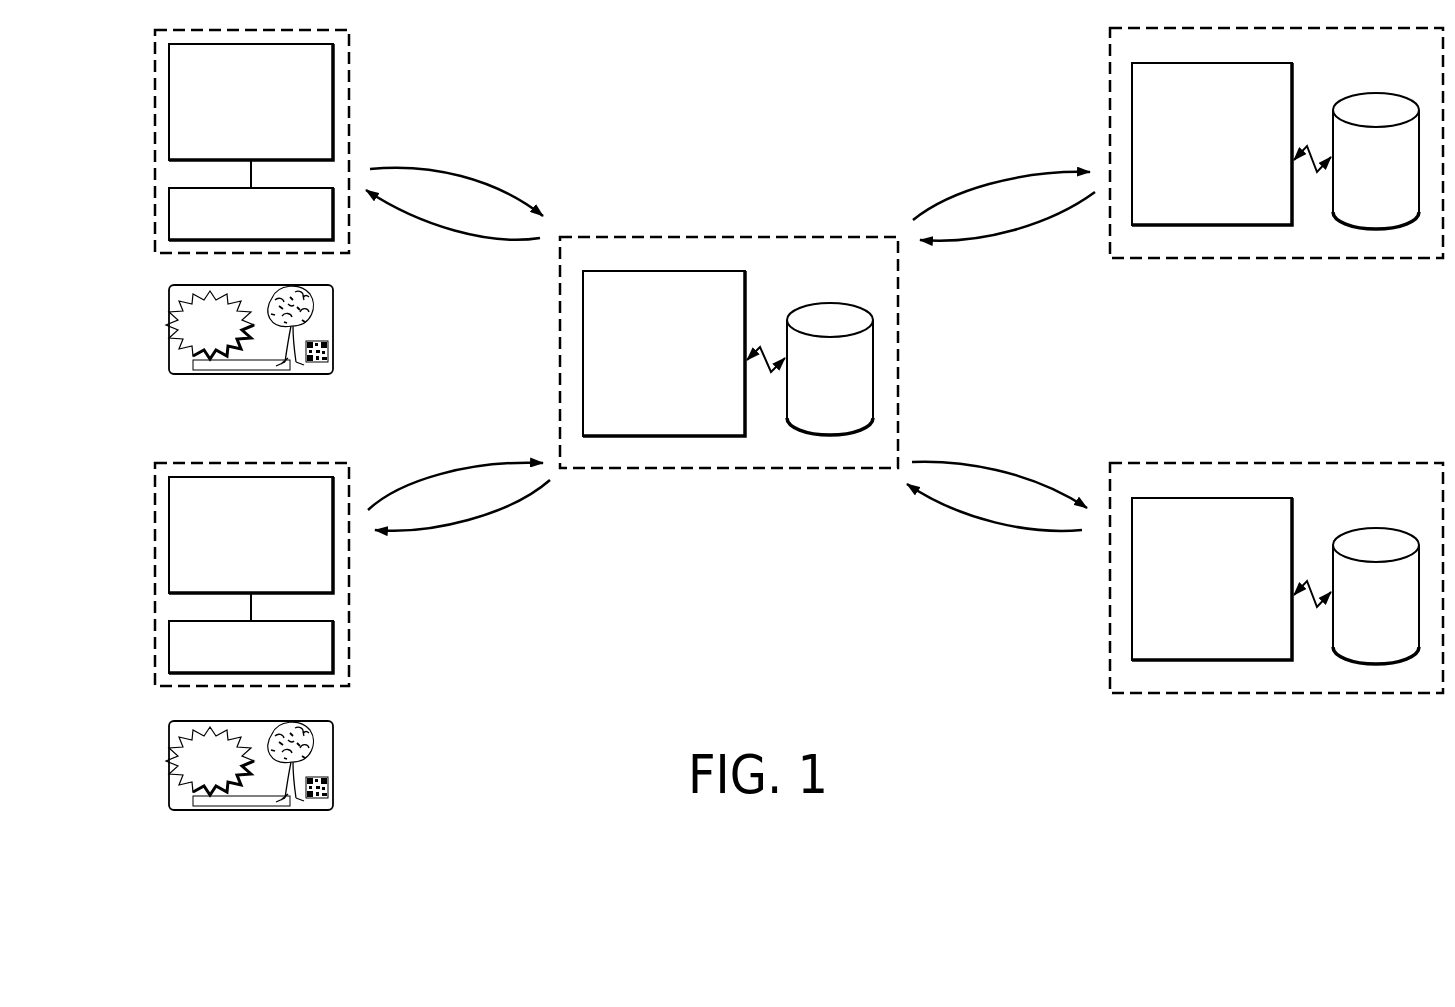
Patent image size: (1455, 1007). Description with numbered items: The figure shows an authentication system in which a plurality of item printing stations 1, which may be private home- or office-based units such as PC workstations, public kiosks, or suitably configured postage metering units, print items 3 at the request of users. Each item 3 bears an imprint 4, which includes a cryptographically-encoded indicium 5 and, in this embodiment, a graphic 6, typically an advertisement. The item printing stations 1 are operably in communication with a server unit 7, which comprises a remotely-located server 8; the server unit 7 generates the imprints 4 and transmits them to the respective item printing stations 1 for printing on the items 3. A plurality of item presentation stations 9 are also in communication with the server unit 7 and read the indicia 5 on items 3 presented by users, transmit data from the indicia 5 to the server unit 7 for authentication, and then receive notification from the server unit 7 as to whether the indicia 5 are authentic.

The item printing station 1 is at (146, 176).
The item 3 is at (158, 380).
The imprint 4 is at (322, 300).
The cryptographically-encoded indicium 5 is at (328, 353).
The graphic 6 is at (178, 321).
The server unit 7 is at (727, 489).
The remotely-located server 8 is at (766, 283).
The item presentation station 9 is at (1299, 270).